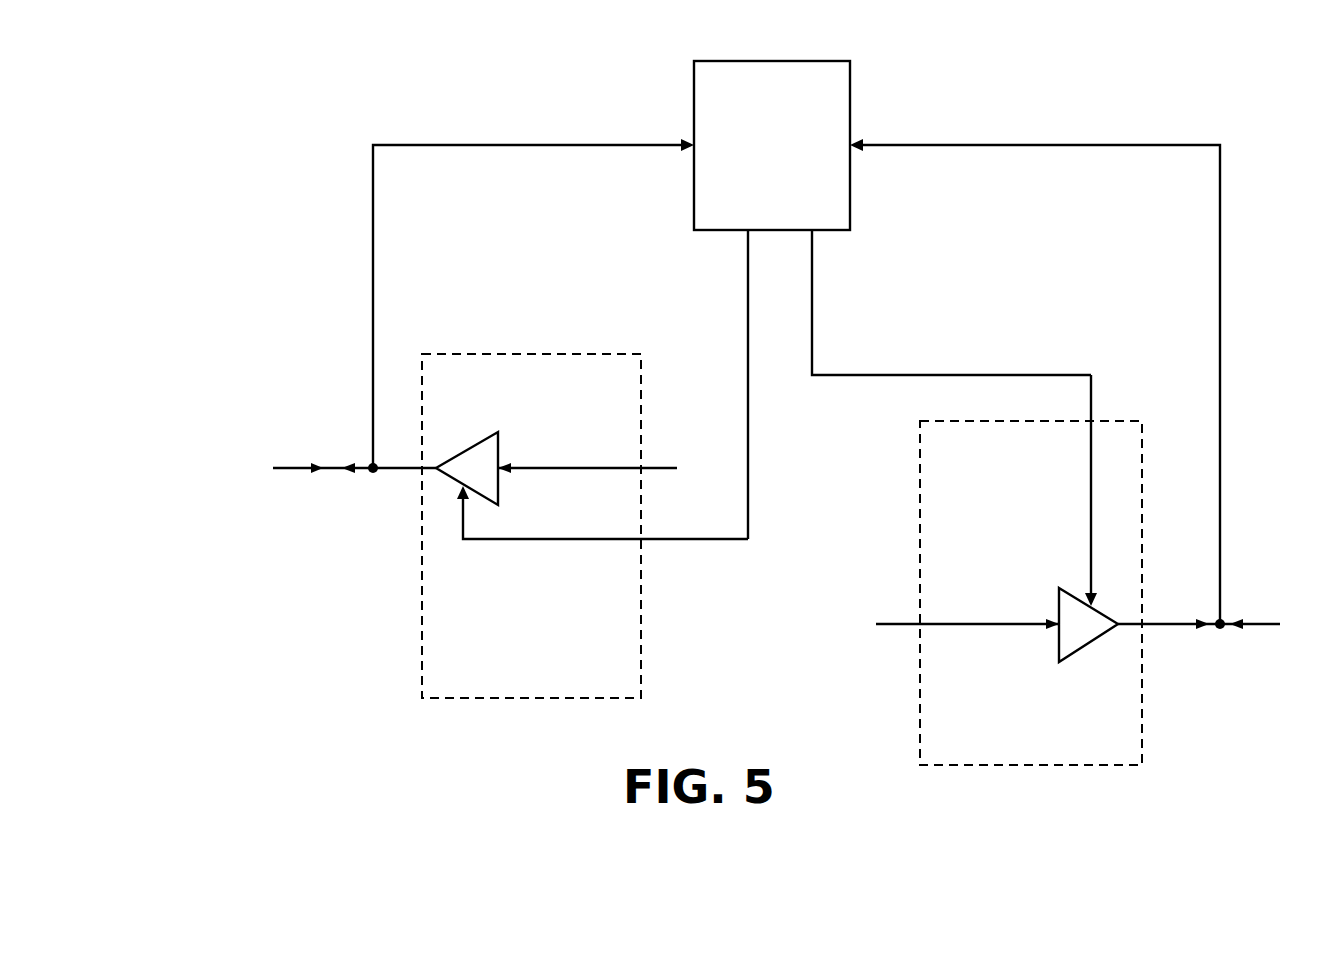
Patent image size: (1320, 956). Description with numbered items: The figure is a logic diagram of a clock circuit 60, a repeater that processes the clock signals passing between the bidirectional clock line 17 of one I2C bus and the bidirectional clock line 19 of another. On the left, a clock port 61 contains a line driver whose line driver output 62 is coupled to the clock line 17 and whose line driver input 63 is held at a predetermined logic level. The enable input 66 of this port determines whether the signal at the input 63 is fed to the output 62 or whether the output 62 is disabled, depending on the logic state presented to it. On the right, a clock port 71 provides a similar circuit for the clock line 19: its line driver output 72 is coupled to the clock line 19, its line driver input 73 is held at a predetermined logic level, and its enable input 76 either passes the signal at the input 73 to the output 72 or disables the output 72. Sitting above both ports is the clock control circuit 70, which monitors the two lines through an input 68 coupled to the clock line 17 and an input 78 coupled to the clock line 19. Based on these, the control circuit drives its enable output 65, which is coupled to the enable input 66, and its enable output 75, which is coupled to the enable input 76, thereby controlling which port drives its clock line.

The clock circuit 60 is at (262, 135).
The clock control circuit 70 is at (772, 145).
The input 68 is at (670, 150).
The input 78 is at (872, 148).
The enable output 65 is at (747, 248).
The enable input 66 is at (675, 541).
The enable output 75 is at (814, 281).
The enable input 76 is at (1092, 406).
The clock line 17 is at (294, 466).
The line driver output 62 is at (405, 474).
The line driver input 63 is at (648, 466).
The clock port 61 is at (531, 526).
The clock port 71 is at (1031, 593).
The line driver input 73 is at (903, 622).
The line driver output 72 is at (1148, 626).
The clock line 19 is at (1258, 622).